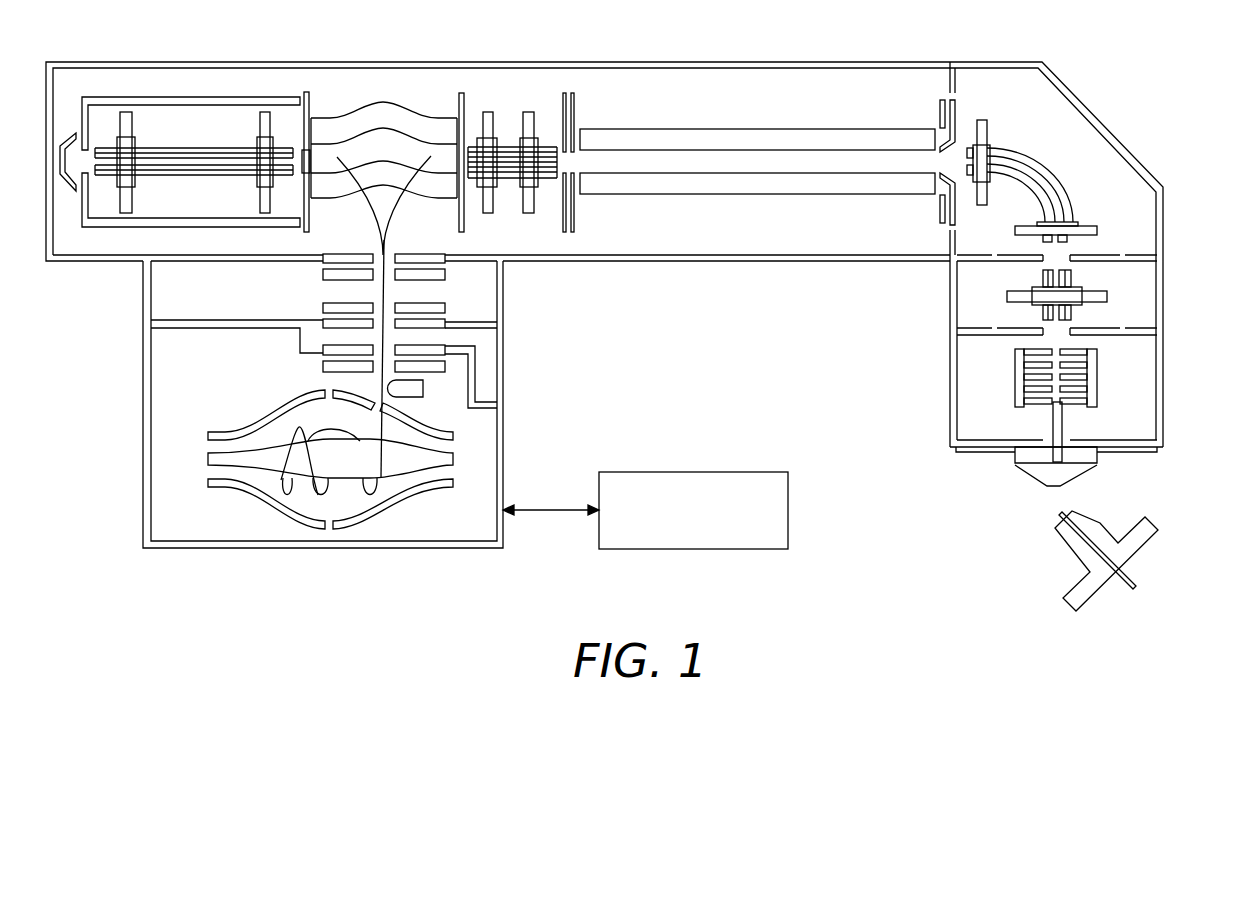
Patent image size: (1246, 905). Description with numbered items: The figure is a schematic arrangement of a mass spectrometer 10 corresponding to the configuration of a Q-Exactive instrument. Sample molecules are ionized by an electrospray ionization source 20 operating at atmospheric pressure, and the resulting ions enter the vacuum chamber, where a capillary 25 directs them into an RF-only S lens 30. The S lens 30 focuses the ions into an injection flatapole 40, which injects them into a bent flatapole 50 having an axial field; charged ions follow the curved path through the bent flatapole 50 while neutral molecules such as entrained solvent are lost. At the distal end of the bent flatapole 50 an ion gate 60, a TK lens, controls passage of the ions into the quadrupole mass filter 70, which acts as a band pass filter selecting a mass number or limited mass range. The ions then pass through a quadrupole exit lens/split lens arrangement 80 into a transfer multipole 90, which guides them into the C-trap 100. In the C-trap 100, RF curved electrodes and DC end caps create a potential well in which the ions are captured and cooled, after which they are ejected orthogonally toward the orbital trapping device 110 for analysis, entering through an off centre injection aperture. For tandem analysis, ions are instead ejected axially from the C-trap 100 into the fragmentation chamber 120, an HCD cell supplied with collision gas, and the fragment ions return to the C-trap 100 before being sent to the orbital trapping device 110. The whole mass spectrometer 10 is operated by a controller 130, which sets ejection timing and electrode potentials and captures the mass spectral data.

The mass spectrometer 10 is at (454, 594).
The electrospray ionization source 20 is at (1065, 540).
The capillary 25 is at (1053, 428).
The S lens 30 is at (1097, 378).
The injection flatapole 40 is at (1107, 297).
The bent flatapole 50 is at (1040, 180).
The ion gate 60 is at (943, 95).
The quadrupole mass filter 70 is at (760, 128).
The quadrupole exit lens/split lens arrangement 80 is at (572, 233).
The transfer multipole 90 is at (507, 118).
The C-trap 100 is at (383, 110).
The orbital trapping device 110 is at (265, 512).
The fragmentation chamber 120 is at (190, 118).
The controller 130 is at (753, 472).